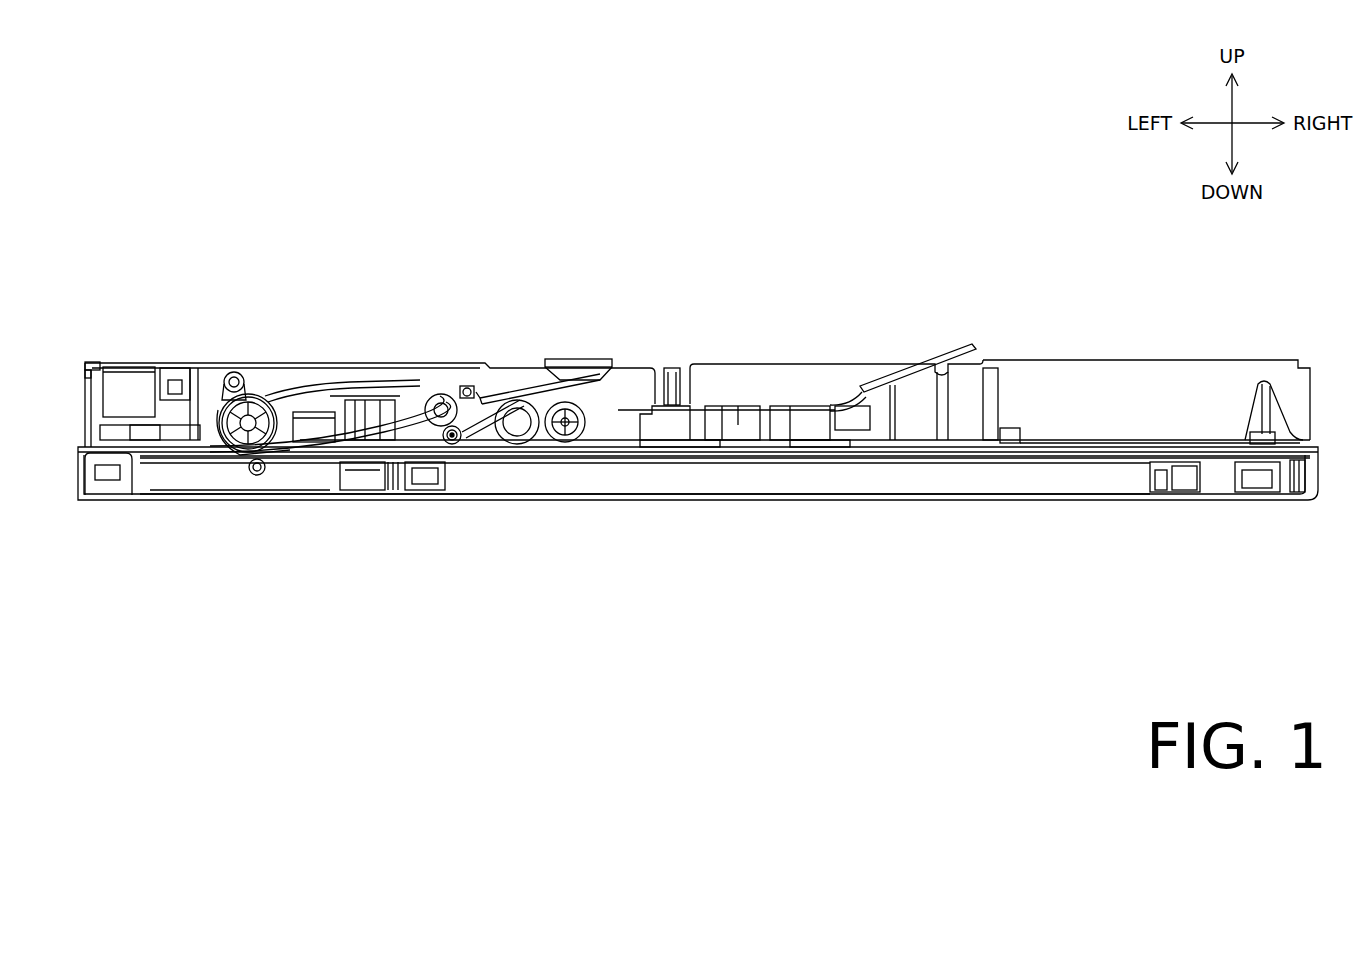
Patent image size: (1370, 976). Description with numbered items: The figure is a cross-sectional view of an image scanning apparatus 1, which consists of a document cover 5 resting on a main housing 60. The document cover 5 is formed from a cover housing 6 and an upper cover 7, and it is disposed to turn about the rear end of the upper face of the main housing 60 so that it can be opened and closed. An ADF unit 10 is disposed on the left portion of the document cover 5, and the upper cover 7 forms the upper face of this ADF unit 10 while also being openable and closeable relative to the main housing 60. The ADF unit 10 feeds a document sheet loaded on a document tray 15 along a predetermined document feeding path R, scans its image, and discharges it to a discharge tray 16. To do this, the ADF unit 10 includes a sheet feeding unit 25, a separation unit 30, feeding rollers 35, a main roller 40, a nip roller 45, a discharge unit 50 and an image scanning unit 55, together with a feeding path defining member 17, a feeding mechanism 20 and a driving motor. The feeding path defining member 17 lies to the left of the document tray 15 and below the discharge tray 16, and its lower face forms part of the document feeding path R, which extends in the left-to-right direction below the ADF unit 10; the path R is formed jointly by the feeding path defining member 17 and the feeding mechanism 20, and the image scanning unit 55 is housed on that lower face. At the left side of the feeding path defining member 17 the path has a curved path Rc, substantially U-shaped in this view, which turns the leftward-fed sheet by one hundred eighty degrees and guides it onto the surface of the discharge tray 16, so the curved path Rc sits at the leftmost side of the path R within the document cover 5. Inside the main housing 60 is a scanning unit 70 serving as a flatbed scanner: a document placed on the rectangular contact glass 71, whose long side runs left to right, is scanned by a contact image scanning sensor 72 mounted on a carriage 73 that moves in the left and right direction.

The image scanning apparatus 1 is at (1226, 352).
The document cover 5 is at (1288, 378).
The cover housing 6 is at (89, 362).
The upper cover 7 is at (150, 362).
The ADF unit 10 is at (347, 350).
The document tray 15 is at (893, 387).
The discharge tray 16 is at (515, 375).
The feeding path defining member 17 is at (425, 385).
The feeding mechanism 20 is at (393, 380).
The sheet feeding unit 25 is at (575, 380).
The separation unit 30 is at (518, 378).
The feeding rollers 35 is at (478, 492).
The main roller 40 is at (255, 368).
The nip roller 45 is at (262, 492).
The discharge unit 50 is at (225, 365).
The image scanning unit 55 is at (313, 368).
The main housing 60 is at (1318, 488).
The scanning unit 70 is at (1078, 480).
The contact glass 71 is at (1012, 460).
The scanning sensor 72 is at (362, 495).
The carriage 73 is at (418, 495).
The document feeding path R is at (390, 495).
The curved path Rc is at (210, 497).